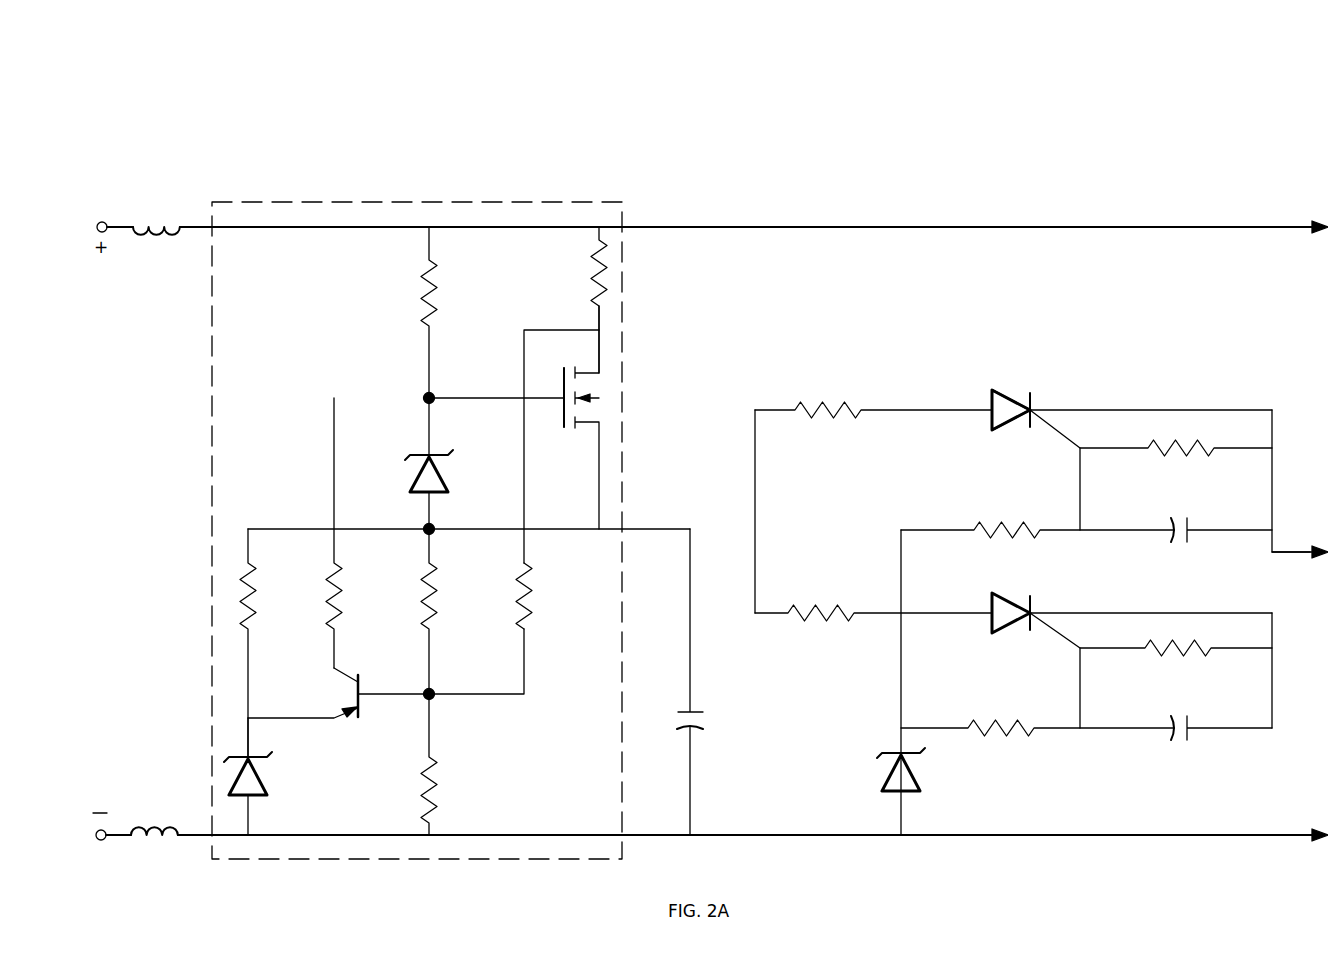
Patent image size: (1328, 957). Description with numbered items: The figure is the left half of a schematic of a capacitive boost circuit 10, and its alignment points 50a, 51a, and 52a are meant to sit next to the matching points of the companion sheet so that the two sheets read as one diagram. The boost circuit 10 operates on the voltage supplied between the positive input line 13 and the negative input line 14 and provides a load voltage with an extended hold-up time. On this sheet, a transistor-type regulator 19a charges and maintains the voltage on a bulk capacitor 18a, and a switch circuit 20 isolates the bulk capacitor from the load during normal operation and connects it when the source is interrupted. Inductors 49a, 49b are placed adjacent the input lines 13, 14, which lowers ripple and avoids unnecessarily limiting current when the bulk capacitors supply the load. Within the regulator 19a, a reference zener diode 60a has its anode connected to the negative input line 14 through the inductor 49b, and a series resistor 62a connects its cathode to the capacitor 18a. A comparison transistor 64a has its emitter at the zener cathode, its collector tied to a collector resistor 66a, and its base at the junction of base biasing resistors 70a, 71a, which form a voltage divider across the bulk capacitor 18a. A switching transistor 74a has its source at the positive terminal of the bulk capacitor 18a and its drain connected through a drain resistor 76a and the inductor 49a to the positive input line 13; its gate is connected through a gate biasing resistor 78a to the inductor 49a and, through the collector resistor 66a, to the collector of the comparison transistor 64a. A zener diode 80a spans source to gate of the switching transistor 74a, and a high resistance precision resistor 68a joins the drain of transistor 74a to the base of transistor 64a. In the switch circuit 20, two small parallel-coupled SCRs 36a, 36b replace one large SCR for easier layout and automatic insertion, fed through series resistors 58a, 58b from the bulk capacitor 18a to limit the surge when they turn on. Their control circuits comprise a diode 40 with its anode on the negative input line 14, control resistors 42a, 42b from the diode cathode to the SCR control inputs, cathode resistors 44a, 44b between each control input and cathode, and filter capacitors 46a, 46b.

The capacitive boost circuit 10 is at (672, 186).
The positive input line 13 is at (108, 223).
The negative input line 14 is at (107, 841).
The bulk capacitor 18a is at (702, 729).
The regulator 19a is at (445, 202).
The switch circuit 20 is at (1130, 374).
The SCR 36a is at (997, 387).
The SCR 36b is at (998, 598).
The diode 40 is at (922, 777).
The control resistor 42a is at (1040, 524).
The control resistor 42b is at (982, 728).
The cathode resistor 44a is at (1180, 454).
The cathode resistor 44b is at (1198, 654).
The filter capacitor 46a is at (1188, 536).
The filter capacitor 46b is at (1190, 732).
The inductor 49a is at (183, 240).
The inductor 49b is at (188, 795).
The alignment point 50a is at (1258, 225).
The alignment point 51a is at (1318, 524).
The alignment point 52a is at (1252, 834).
The series resistor 58a is at (837, 403).
The series resistor 58b is at (848, 610).
The reference zener diode 60a is at (270, 767).
The series resistor 62a is at (252, 580).
The comparison transistor 64a is at (360, 711).
The collector resistor 66a is at (338, 580).
The high resistance precision resistor 68a is at (528, 580).
The base biasing resistor 70a is at (433, 580).
The base biasing resistor 71a is at (433, 768).
The switching transistor 74a is at (591, 425).
The drain resistor 76a is at (588, 285).
The gate biasing resistor 78a is at (420, 275).
The zener diode 80a is at (450, 476).